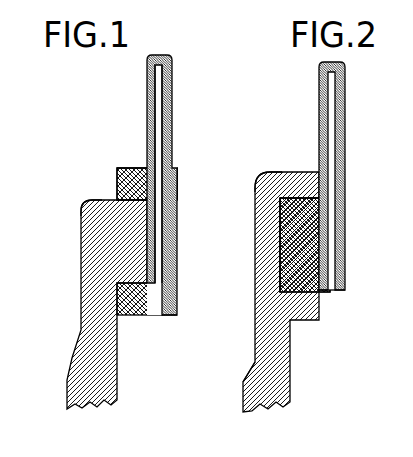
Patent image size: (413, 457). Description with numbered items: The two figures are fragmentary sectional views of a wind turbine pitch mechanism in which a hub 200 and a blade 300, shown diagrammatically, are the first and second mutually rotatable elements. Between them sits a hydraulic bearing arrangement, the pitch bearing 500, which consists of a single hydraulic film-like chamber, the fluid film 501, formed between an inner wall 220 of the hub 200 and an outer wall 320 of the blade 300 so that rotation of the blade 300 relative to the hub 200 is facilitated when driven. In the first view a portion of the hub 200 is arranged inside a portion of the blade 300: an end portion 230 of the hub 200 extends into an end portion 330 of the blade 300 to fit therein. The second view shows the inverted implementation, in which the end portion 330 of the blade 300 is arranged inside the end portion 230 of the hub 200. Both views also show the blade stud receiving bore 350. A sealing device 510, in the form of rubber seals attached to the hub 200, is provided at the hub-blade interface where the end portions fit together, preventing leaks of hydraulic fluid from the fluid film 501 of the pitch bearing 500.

In FIG. 1, the hub 200 is at (80, 268).
In FIG. 2, the hub 200 is at (291, 369).
In FIG. 1, the inner wall of the hub 220 is at (117, 283).
In FIG. 1, the end portion of the hub 230 is at (88, 219).
In FIG. 2, the end portion of the hub 230 is at (303, 172).
In FIG. 1, the blade 300 is at (147, 90).
In FIG. 2, the blade 300 is at (319, 97).
In FIG. 1, the outer wall of the blade 320 is at (157, 243).
In FIG. 1, the end portion of the blade 330 is at (119, 167).
In FIG. 2, the end portion of the blade 330 is at (280, 267).
In FIG. 1, the blade stud receiving bore 350 is at (158, 316).
In FIG. 2, the blade stud receiving bore 350 is at (330, 293).
In FIG. 1, the pitch bearing 500 is at (90, 163).
In FIG. 2, the pitch bearing 500 is at (277, 160).
In FIG. 1, the fluid film 501 is at (176, 182).
In FIG. 2, the fluid film 501 is at (327, 197).
In FIG. 1, the sealing device 510 is at (117, 196).
In FIG. 2, the sealing device 510 is at (329, 223).